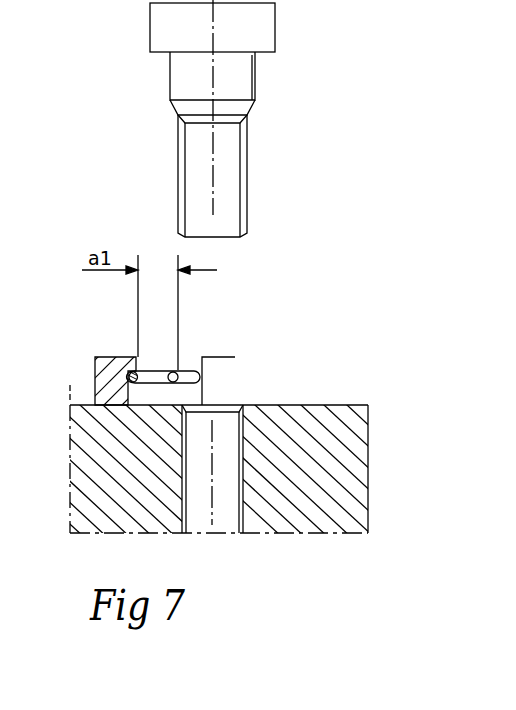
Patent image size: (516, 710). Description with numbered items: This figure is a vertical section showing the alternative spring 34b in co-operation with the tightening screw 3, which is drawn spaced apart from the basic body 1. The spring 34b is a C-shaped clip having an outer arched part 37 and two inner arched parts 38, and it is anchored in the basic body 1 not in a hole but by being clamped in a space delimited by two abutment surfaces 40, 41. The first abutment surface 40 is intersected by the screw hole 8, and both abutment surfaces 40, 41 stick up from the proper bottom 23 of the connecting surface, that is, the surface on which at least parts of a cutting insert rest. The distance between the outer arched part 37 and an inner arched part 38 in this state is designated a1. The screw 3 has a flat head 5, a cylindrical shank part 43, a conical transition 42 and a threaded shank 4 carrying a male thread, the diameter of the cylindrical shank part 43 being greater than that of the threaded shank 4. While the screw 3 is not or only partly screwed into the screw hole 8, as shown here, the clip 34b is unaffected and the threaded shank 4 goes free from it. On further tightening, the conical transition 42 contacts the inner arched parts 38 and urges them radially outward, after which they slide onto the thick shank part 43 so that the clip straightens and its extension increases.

The basic body 1 is at (258, 469).
The screw 3 is at (218, 118).
The shank 4 is at (185, 190).
The flat head 5 is at (161, 24).
The screw hole 8 is at (232, 508).
The bottom 23 is at (296, 404).
The spring 34b is at (158, 349).
The outer arched part 37 is at (128, 378).
The inner arched part 38 is at (173, 372).
The abutment surface 40 is at (205, 357).
The abutment surface 41 is at (137, 357).
The conical transition 42 is at (256, 104).
The cylindrical shank part 43 is at (184, 76).